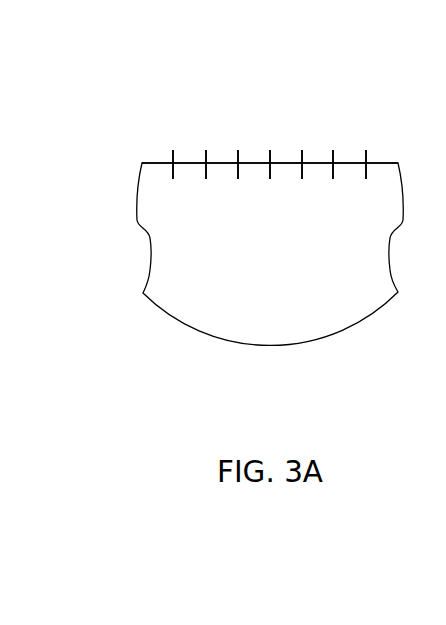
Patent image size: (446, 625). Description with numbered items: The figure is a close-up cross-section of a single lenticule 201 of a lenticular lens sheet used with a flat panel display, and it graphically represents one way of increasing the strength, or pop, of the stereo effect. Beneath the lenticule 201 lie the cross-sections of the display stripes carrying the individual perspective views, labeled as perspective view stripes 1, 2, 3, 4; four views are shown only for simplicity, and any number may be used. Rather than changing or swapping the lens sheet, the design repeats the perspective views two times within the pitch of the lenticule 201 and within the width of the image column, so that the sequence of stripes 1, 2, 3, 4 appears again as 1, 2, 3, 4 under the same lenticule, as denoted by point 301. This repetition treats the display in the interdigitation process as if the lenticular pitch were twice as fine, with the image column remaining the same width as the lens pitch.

The lenticule 201 is at (180, 322).
The point denoting repeated perspective views 301 is at (225, 132).
The perspective view stripe 1 is at (227, 158).
The perspective view stripe 2 is at (258, 158).
The perspective view stripe 3 is at (291, 158).
The perspective view stripe 4 is at (317, 158).